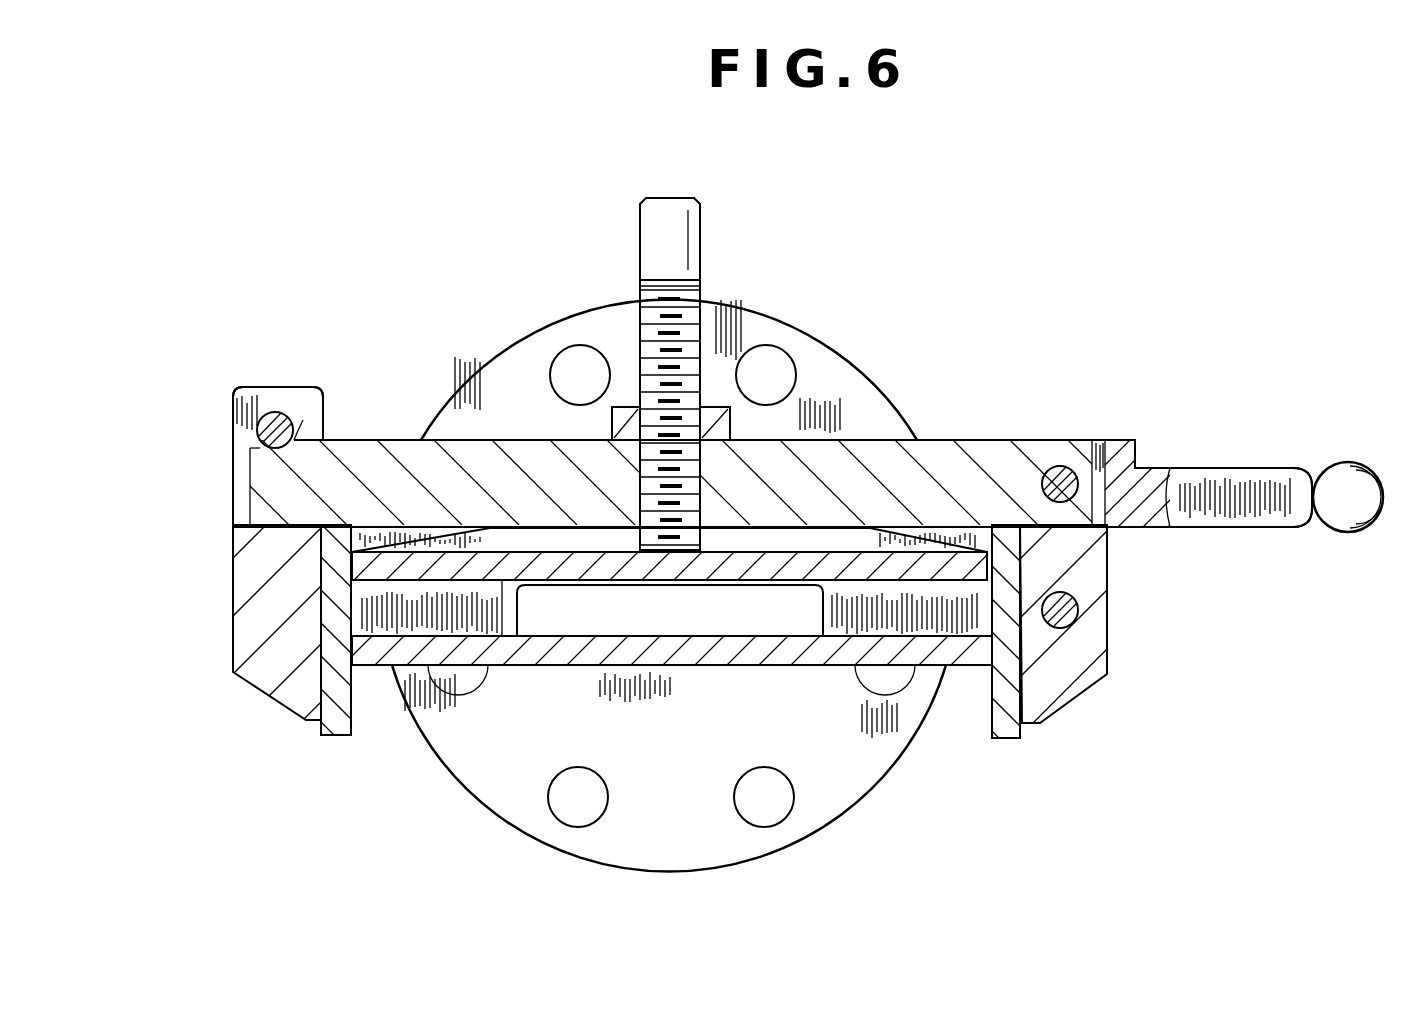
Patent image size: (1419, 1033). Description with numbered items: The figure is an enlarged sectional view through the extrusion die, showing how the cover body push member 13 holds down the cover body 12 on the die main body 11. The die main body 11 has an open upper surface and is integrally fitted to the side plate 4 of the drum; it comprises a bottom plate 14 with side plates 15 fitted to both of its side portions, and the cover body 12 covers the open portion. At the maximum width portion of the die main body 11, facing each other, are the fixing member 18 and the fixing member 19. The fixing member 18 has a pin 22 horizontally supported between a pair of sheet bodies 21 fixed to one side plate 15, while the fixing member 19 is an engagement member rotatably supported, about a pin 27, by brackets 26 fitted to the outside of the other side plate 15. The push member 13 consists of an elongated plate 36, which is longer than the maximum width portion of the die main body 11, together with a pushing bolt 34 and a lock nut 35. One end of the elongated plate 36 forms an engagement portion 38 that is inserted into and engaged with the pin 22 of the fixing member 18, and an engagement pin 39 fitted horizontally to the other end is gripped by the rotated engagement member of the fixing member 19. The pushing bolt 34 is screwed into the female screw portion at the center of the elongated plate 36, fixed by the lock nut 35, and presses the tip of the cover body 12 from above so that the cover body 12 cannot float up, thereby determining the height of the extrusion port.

The side plate 4 is at (512, 352).
The die main body 11 is at (525, 680).
The cover body 12 is at (745, 580).
The cover body push member 13 is at (957, 415).
The bottom plate 14 is at (797, 665).
The side plates 15 is at (347, 698).
The fixing member 18 is at (231, 384).
The fixing member 19 is at (1153, 456).
The sheet bodies 21 is at (240, 436).
The pin 22 is at (280, 412).
The brackets 26 is at (1097, 573).
The pin 27 is at (1080, 616).
The pushing bolt 34 is at (640, 333).
The lock nut 35 is at (628, 410).
The elongated plate 36 is at (935, 447).
The engagement portion 38 is at (306, 438).
The engagement pin 39 is at (1063, 469).